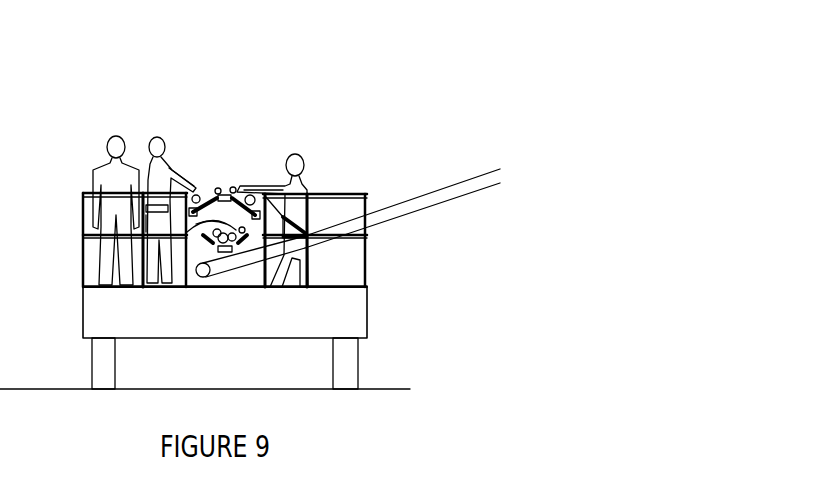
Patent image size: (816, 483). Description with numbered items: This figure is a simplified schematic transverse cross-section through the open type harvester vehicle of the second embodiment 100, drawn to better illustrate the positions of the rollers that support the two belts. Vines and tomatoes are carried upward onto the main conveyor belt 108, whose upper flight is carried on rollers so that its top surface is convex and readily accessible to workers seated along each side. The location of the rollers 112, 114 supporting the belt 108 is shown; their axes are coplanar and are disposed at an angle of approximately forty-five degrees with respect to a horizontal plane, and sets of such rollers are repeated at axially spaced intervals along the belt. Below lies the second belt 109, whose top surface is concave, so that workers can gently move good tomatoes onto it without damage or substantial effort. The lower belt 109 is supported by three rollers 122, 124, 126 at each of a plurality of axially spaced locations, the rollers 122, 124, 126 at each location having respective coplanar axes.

The second embodiment 100 is at (250, 199).
The main conveyor belt 108 is at (222, 190).
The second belt 109 is at (207, 227).
The roller 112 is at (193, 200).
The roller 114 is at (267, 197).
The roller 122 is at (200, 240).
The roller 124 is at (222, 252).
The roller 126 is at (263, 275).